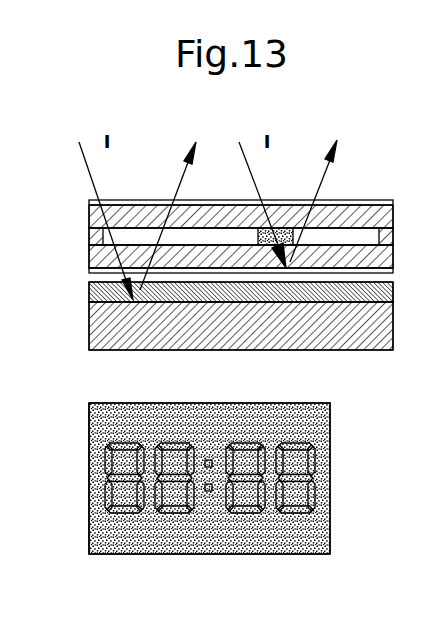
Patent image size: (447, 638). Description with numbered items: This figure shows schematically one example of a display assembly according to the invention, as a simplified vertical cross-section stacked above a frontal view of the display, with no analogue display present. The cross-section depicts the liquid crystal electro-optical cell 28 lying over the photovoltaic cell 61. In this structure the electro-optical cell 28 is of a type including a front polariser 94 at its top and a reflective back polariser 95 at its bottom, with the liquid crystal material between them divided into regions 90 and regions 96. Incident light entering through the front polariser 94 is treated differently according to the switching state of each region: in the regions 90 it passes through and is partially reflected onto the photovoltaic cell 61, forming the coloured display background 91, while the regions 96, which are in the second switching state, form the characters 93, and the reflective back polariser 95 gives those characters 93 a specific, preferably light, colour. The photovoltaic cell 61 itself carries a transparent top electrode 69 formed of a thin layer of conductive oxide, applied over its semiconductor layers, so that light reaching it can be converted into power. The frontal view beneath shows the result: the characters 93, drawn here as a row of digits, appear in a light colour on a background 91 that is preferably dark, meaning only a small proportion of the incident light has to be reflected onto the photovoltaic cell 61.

The liquid crystal electro-optical cell 28 is at (238, 216).
The front polariser 94 is at (90, 211).
The regions 90 is at (202, 234).
The regions 96 is at (287, 229).
The reflective back polariser 95 is at (90, 271).
The photovoltaic cell 61 is at (238, 314).
The transparent top electrode 69 is at (90, 286).
The characters 93 is at (105, 495).
The display background 91 is at (95, 531).